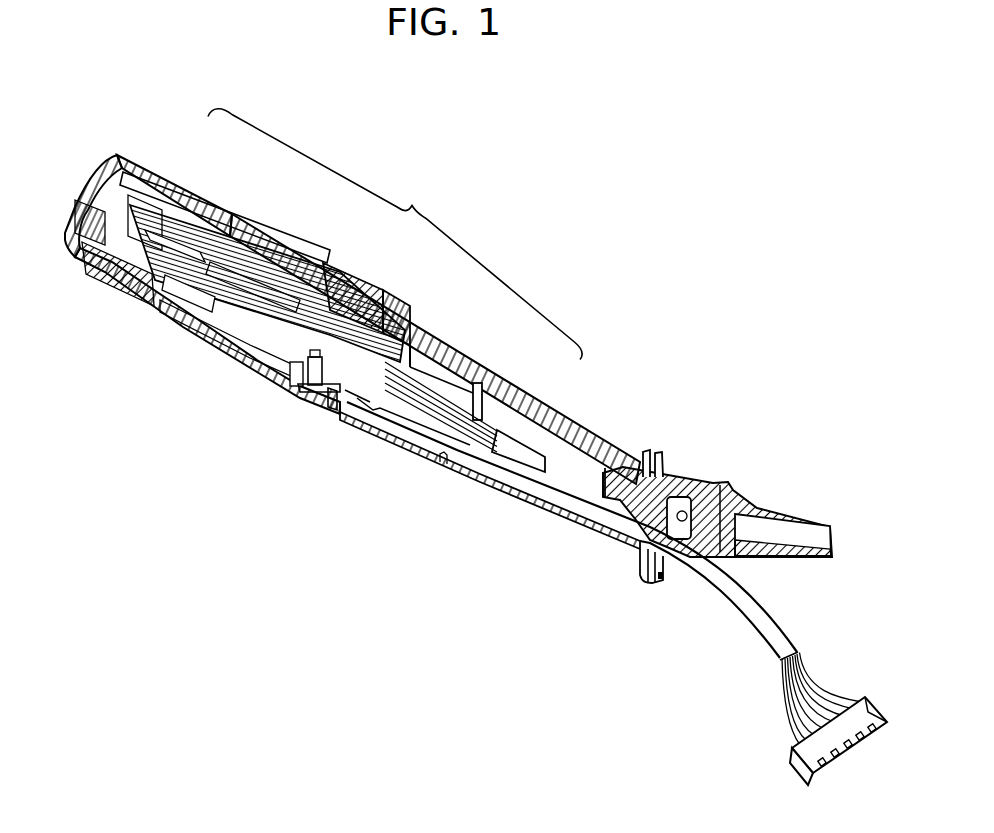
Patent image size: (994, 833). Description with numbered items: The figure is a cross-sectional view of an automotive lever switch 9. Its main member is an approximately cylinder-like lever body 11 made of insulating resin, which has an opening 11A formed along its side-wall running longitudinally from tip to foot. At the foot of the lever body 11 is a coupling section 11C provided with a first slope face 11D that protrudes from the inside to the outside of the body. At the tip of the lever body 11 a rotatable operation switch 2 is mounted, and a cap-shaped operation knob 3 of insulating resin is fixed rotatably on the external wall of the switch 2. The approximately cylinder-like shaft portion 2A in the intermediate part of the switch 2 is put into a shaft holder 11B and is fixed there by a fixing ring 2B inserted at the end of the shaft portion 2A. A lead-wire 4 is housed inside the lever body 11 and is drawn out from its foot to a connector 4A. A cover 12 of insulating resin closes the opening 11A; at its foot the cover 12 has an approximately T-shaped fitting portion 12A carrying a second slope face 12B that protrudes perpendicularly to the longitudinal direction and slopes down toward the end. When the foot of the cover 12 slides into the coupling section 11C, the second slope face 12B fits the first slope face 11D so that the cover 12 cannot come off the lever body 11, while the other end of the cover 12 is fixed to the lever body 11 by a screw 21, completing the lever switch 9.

The automotive lever switch 9 is at (432, 196).
The lever body 11 is at (480, 370).
The operation knob 3 is at (170, 187).
The operation switch 2 is at (223, 213).
The shaft portion 2A is at (307, 317).
The shaft holder 11B is at (353, 310).
The screw 21 is at (303, 392).
The fixing ring 2B is at (347, 407).
The opening 11A is at (478, 472).
The cover 12 is at (417, 455).
The fitting portion 12A is at (642, 563).
The second slope face 12B is at (647, 573).
The first slope face 11D is at (650, 580).
The coupling section 11C is at (660, 583).
The lead-wire 4 is at (790, 695).
The connector 4A is at (798, 767).